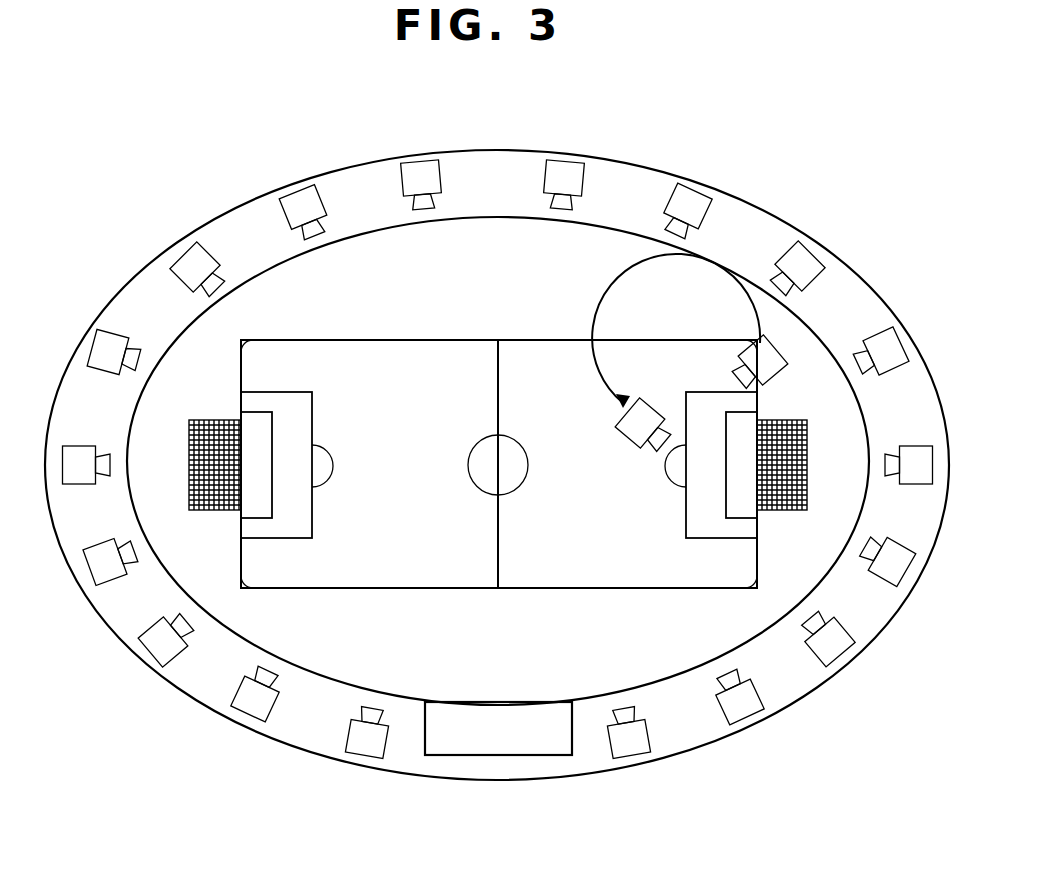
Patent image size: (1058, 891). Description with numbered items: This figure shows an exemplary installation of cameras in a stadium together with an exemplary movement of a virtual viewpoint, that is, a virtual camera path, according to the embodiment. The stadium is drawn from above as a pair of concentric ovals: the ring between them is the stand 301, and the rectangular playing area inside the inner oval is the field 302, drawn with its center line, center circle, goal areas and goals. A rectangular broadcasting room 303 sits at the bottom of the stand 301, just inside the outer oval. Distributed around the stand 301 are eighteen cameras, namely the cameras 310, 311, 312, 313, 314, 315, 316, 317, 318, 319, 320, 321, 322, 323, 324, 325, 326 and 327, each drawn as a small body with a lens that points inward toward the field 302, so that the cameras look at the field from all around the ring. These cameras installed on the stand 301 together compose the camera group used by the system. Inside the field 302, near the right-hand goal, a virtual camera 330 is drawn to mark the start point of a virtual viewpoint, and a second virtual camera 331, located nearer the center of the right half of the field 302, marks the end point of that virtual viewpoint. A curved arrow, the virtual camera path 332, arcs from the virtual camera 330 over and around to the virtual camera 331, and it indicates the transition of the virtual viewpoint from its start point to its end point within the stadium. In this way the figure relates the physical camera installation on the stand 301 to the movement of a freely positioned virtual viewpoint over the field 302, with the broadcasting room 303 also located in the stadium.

The stand 301 is at (496, 158).
The field 302 is at (442, 339).
The broadcasting room 303 is at (505, 757).
The camera 310 is at (634, 757).
The camera 311 is at (755, 723).
The camera 312 is at (848, 660).
The camera 313 is at (907, 578).
The camera 314 is at (914, 446).
The camera 315 is at (882, 332).
The camera 316 is at (812, 245).
The camera 317 is at (690, 186).
The camera 318 is at (567, 160).
The camera 319 is at (420, 160).
The camera 320 is at (296, 190).
The camera 321 is at (182, 248).
The camera 322 is at (120, 340).
The camera 323 is at (66, 446).
The camera 324 is at (95, 584).
The camera 325 is at (145, 661).
The camera 326 is at (242, 718).
The camera 327 is at (362, 757).
The virtual camera 330 is at (785, 377).
The virtual camera 331 is at (626, 445).
The virtual camera path 332 is at (645, 303).